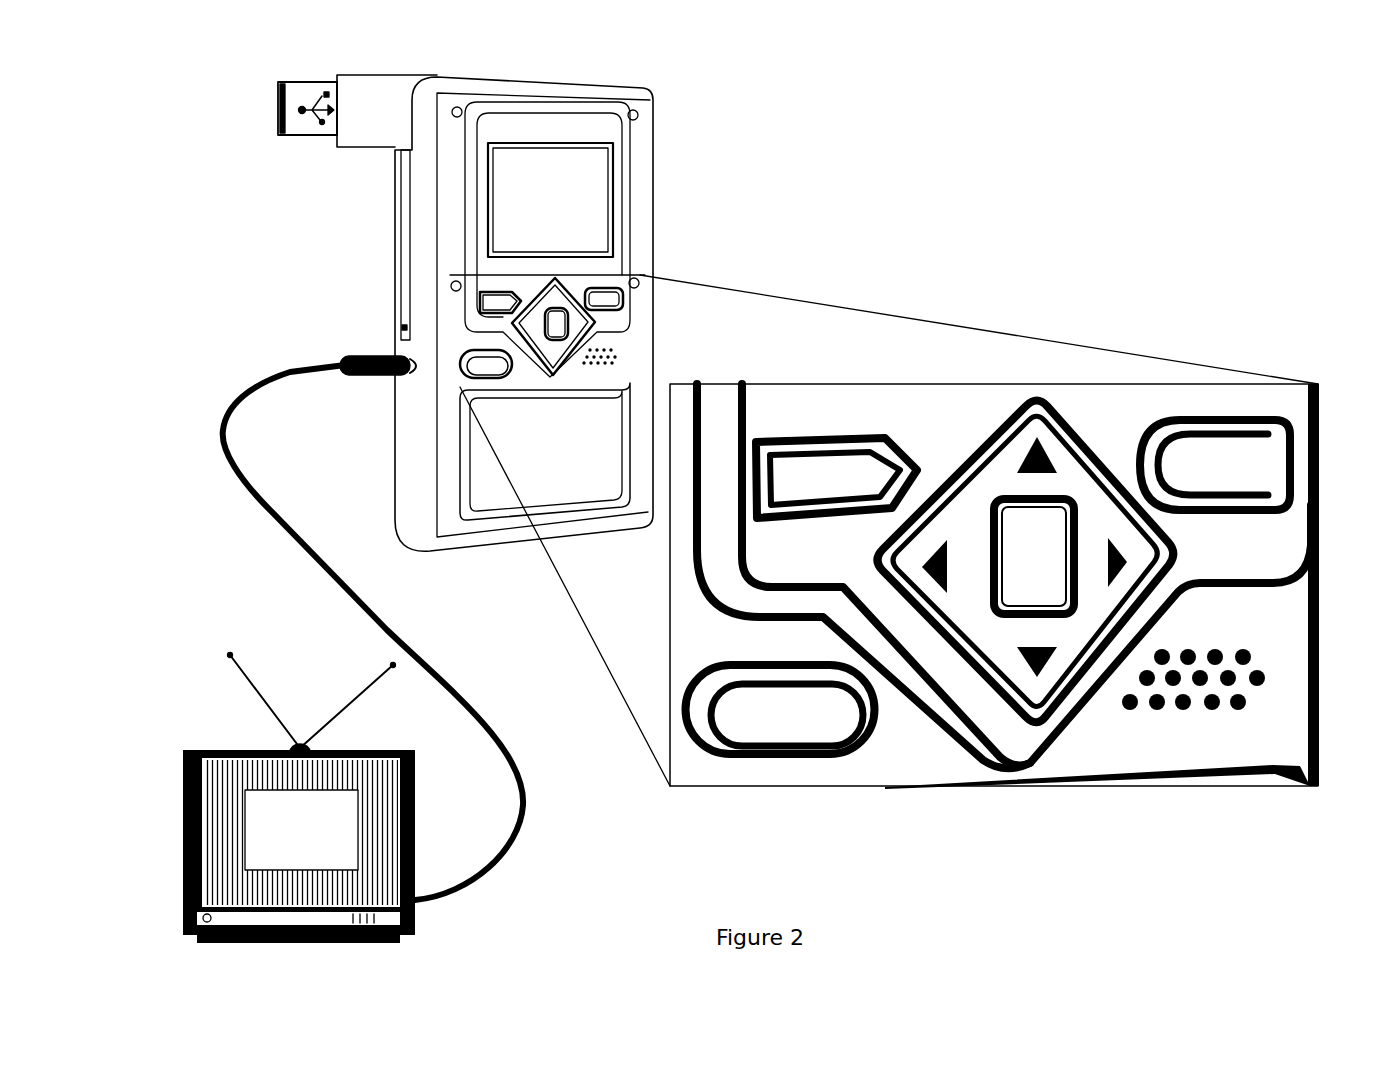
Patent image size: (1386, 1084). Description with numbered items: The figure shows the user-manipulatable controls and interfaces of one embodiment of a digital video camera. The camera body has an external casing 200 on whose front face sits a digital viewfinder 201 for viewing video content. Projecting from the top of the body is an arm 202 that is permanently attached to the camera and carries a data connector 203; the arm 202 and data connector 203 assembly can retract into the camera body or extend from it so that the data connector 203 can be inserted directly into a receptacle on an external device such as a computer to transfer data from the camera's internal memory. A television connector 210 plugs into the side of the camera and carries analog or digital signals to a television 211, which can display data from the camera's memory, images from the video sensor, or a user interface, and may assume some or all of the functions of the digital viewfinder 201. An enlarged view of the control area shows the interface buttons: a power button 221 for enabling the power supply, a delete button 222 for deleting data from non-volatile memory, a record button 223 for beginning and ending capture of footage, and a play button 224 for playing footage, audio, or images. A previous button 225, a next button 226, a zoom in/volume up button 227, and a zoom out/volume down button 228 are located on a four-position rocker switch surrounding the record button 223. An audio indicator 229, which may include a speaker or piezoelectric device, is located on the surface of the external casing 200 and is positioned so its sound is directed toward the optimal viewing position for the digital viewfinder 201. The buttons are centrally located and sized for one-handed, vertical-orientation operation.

The external casing 200 is at (653, 150).
The digital viewfinder 201 is at (550, 200).
The arm 202 is at (360, 149).
The data connector 203 is at (280, 107).
The television connector 210 is at (290, 367).
The television 211 is at (299, 798).
The power button 221 is at (760, 753).
The delete button 222 is at (1240, 420).
The record button 223 is at (1034, 556).
The play button 224 is at (842, 517).
The previous button 225 is at (937, 557).
The next button 226 is at (1123, 558).
The zoom in/volume up button 227 is at (1037, 458).
The zoom out/volume down button 228 is at (1035, 663).
The audio indicator 229 is at (1172, 700).